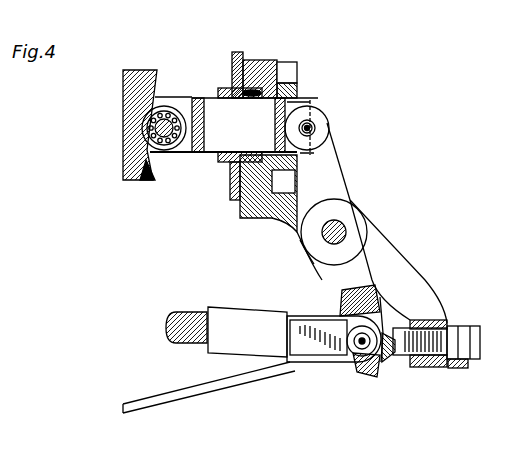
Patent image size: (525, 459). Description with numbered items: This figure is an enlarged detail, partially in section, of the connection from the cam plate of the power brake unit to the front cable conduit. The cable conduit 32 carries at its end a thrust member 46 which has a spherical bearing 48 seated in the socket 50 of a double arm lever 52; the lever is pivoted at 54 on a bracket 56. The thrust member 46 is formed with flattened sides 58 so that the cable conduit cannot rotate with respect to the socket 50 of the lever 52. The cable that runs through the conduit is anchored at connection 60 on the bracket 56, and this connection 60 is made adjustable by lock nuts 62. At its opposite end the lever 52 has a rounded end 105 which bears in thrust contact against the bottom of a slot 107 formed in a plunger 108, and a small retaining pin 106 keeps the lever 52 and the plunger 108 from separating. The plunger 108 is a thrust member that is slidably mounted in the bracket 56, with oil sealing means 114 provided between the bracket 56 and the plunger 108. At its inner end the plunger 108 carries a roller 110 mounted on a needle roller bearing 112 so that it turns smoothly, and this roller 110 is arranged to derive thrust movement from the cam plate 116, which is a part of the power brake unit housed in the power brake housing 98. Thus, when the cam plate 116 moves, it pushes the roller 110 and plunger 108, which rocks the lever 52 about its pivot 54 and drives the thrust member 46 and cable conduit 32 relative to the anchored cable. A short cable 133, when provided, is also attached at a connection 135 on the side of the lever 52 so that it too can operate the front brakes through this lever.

The cable conduit 32 is at (182, 337).
The thrust member 46 is at (313, 322).
The spherical bearing 48 is at (381, 362).
The socket 50 is at (370, 374).
The double arm lever 52 is at (357, 267).
The pivot 54 is at (343, 228).
The bracket 56 is at (267, 198).
The flattened sides 58 is at (332, 345).
The cable anchor connection 60 is at (445, 328).
The lock nuts 62 is at (455, 360).
The power brake housing 98 is at (242, 56).
The rounded end 105 is at (328, 138).
The retaining pin 106 is at (313, 127).
The slot 107 is at (296, 102).
The plunger 108 is at (285, 94).
The roller 110 is at (172, 142).
The needle roller bearing 112 is at (150, 127).
The oil sealing means 114 is at (235, 167).
The cam plate 116 is at (125, 90).
The short cable 133 is at (192, 395).
The cable connection 135 is at (337, 320).